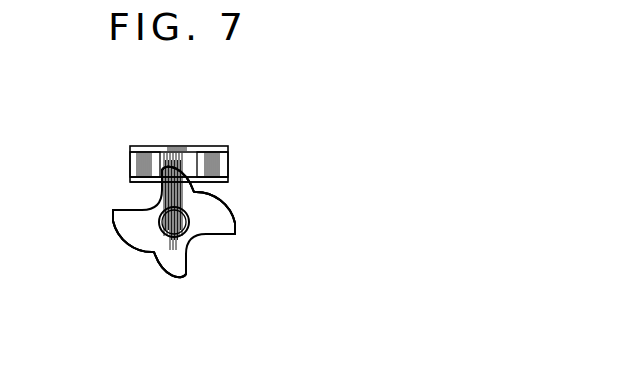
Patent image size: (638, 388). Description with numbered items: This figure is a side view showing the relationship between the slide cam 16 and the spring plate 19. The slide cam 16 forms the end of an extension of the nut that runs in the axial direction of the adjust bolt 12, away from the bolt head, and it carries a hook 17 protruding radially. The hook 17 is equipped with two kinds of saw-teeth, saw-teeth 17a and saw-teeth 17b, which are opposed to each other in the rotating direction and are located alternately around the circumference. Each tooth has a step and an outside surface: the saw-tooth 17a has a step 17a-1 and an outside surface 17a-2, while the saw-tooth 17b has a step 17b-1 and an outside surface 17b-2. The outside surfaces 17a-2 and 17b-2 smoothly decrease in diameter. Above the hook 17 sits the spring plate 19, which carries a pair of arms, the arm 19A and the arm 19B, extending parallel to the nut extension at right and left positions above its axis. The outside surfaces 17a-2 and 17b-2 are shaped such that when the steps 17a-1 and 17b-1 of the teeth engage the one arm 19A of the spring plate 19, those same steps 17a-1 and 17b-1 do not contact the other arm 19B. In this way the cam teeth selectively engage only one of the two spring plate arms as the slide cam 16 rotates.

The adjust bolt 12 is at (189, 214).
The slide cam 16 is at (146, 188).
The hook 17 is at (187, 173).
The saw-tooth 17a is at (178, 168).
The step 17a-1 is at (162, 172).
The outside surface 17a-2 is at (183, 167).
The saw-tooth 17b is at (114, 218).
The step 17b-1 is at (127, 207).
The outside surface 17b-2 is at (124, 237).
The spring plate 19 is at (228, 147).
The arm 19A is at (132, 172).
The arm 19B is at (229, 171).